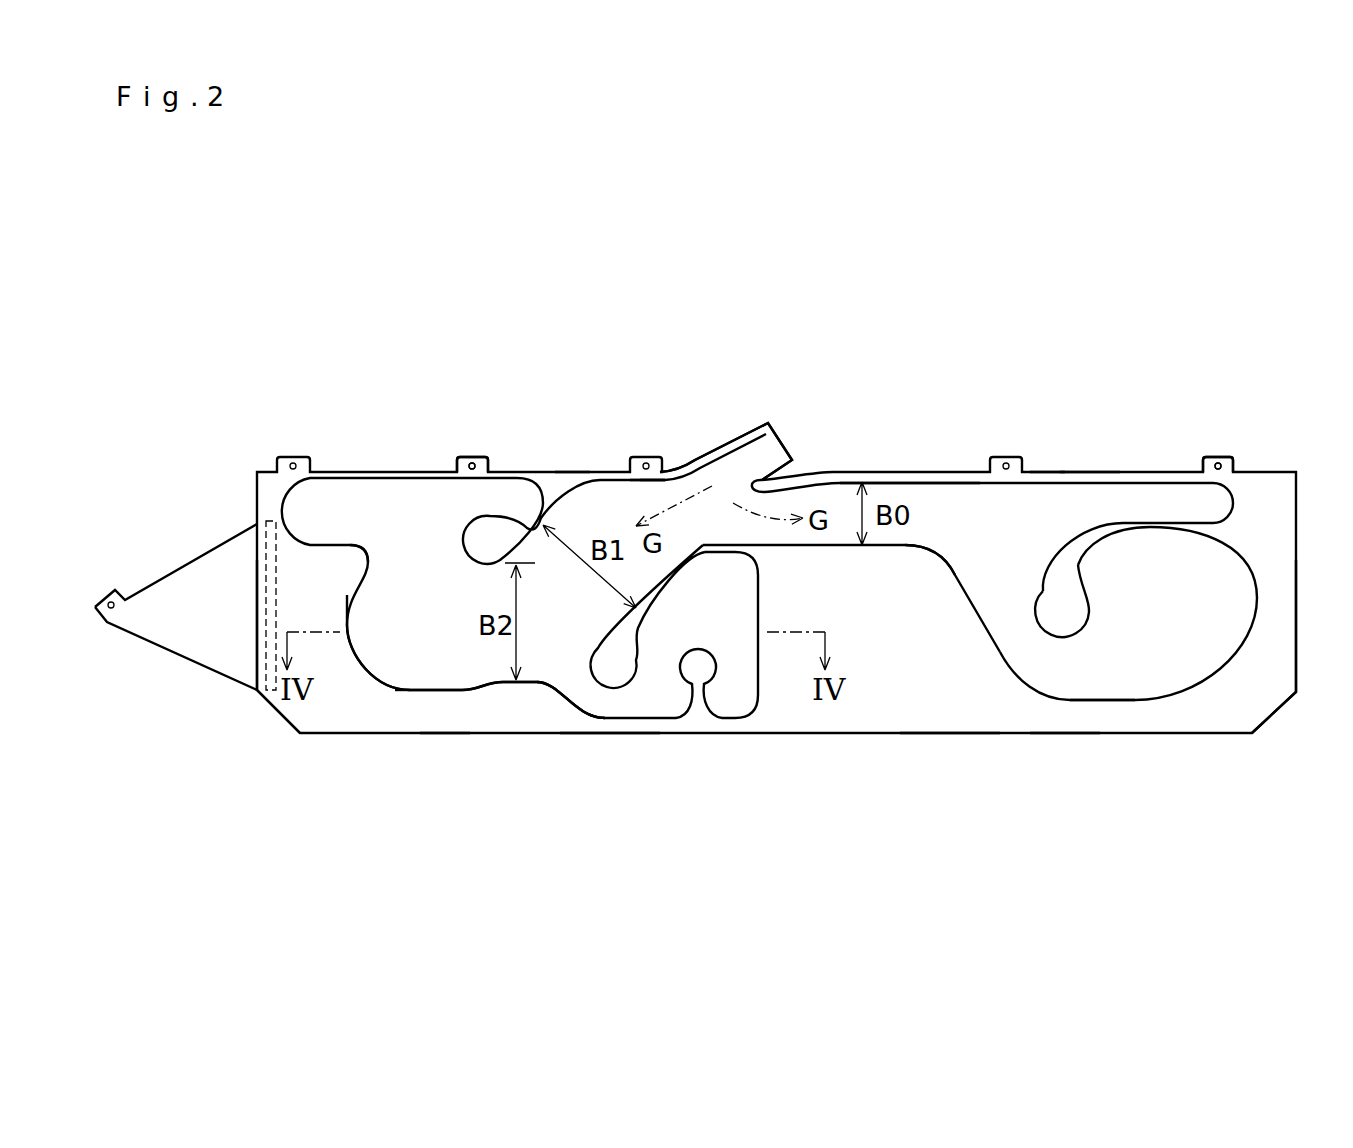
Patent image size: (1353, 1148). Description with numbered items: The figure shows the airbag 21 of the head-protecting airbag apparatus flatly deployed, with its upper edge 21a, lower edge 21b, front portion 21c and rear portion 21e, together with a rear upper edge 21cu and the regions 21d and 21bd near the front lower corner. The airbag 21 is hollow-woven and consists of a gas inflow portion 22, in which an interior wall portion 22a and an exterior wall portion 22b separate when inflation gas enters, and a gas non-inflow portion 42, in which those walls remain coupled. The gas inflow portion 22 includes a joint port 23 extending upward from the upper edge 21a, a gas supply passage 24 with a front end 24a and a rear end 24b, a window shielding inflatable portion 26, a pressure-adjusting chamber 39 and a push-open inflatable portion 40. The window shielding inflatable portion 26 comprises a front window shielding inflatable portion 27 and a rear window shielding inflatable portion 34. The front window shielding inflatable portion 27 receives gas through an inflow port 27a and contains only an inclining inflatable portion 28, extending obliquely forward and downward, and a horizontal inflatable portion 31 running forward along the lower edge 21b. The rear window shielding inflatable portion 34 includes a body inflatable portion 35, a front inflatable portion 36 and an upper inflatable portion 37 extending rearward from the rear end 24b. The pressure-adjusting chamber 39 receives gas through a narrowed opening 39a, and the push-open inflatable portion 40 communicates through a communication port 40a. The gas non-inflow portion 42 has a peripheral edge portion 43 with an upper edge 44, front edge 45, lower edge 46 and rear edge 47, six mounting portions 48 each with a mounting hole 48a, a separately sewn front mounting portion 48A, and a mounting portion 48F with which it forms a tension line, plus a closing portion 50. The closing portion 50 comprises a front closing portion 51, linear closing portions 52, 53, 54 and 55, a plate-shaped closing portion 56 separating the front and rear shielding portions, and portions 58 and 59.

The airbag 21 is at (251, 326).
The upper edge 21a is at (893, 476).
The lower edge 21b is at (947, 718).
The lower corner portion 21bd is at (310, 715).
The front portion 21c is at (602, 768).
The rear upper edge 21cu is at (608, 512).
The left side edge 21d is at (257, 607).
The rear portion 21e is at (1059, 768).
The gas inflow portion 22 is at (420, 682).
The interior wall portion 22a is at (407, 670).
The exterior wall portion 22b is at (372, 697).
The joint port 23 is at (768, 447).
The gas supply passage 24 is at (838, 497).
The front end 24a is at (669, 503).
The rear end 24b is at (949, 515).
The window shielding inflatable portion 26 is at (560, 807).
The front window shielding inflatable portion 27 is at (501, 776).
The inflow port 27a is at (653, 520).
The inclining inflatable portion 28 is at (575, 580).
The horizontal inflatable portion 31 is at (458, 627).
The rear window shielding inflatable portion 34 is at (1245, 837).
The body inflatable portion 35 is at (1173, 612).
The front inflatable portion 36 is at (1005, 598).
The upper inflatable portion 37 is at (1128, 500).
The pressure-adjusting chamber 39 is at (660, 672).
The opening 39a is at (592, 687).
The push-open inflatable portion 40 is at (412, 505).
The communication port 40a is at (390, 535).
The gas non-inflow portion 42 is at (1098, 450).
The peripheral edge portion 43 is at (1100, 397).
The upper edge 44 is at (573, 470).
The front edge 45 is at (328, 615).
The lower edge 46 is at (442, 717).
The rear edge 47 is at (1277, 603).
The mounting portion 48 is at (463, 456).
The mounting portion 48A is at (100, 607).
The mounting portion 48F is at (1218, 464).
The mounting hole 48a is at (473, 457).
The closing portion 50 is at (327, 617).
The front closing portion 51 is at (246, 520).
The linear closing portion 52 is at (531, 479).
The linear closing portion 53 is at (648, 679).
The linear closing portion 54 is at (698, 708).
The linear closing portion 55 is at (1062, 612).
The plate-shaped closing portion 56 is at (878, 695).
The hook portion 58 is at (488, 538).
The hook portion 59 is at (660, 622).